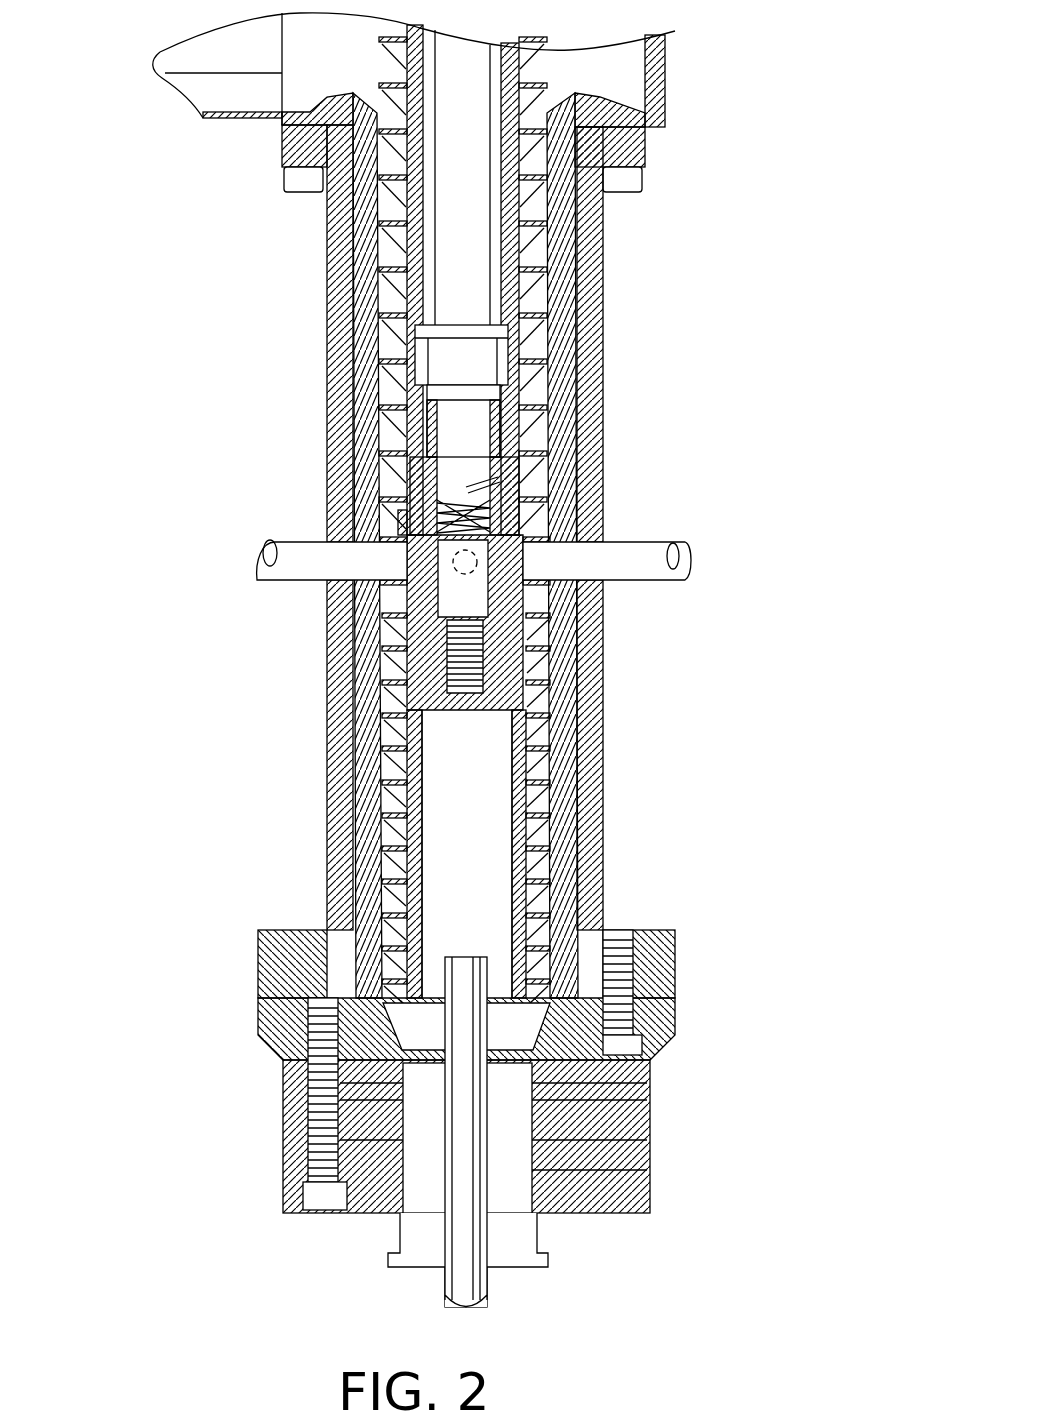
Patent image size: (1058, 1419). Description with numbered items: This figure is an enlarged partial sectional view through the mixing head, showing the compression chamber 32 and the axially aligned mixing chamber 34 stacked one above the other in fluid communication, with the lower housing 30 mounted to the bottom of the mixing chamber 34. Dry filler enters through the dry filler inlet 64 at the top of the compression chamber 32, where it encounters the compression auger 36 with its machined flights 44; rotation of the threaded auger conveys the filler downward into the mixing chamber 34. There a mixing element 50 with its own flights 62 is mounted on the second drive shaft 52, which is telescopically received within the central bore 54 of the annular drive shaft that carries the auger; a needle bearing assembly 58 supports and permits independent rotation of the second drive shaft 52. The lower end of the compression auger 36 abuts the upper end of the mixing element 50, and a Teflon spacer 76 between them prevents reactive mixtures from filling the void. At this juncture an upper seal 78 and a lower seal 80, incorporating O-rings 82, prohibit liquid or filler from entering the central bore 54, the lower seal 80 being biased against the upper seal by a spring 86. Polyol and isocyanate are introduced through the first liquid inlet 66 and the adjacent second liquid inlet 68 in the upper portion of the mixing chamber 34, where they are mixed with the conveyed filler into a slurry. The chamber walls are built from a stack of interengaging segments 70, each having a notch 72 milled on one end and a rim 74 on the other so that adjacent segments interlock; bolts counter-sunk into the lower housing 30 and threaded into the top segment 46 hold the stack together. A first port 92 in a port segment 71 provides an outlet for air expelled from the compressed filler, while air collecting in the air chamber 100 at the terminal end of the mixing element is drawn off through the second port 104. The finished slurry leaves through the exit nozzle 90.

The lower housing 30 is at (260, 973).
The compression chamber 32 is at (292, 350).
The mixing chamber 34 is at (310, 779).
The compression auger 36 is at (378, 282).
The flights 44 is at (537, 262).
The top segment 46 is at (278, 150).
The mixing element 50 is at (392, 660).
The second drive shaft 52 is at (592, 222).
The central bore 54 is at (350, 207).
The needle bearing assembly 58 is at (513, 350).
The flights 62 is at (392, 692).
The dry filler inlet 64 is at (168, 73).
The first liquid inlet 66 is at (340, 558).
The second liquid inlet 68 is at (287, 582).
The segments 70 is at (603, 647).
The port segment 71 is at (355, 607).
The notch 72 is at (466, 572).
The rim 74 is at (603, 793).
The Teflon spacer 76 is at (500, 489).
The upper seal 78 is at (513, 392).
The lower seal 80 is at (519, 522).
The O-rings 82 is at (392, 445).
The spring 86 is at (400, 520).
The exit nozzle 90 is at (395, 1238).
The first port 92 is at (612, 582).
The air chamber 100 is at (345, 823).
The second port 104 is at (310, 1098).